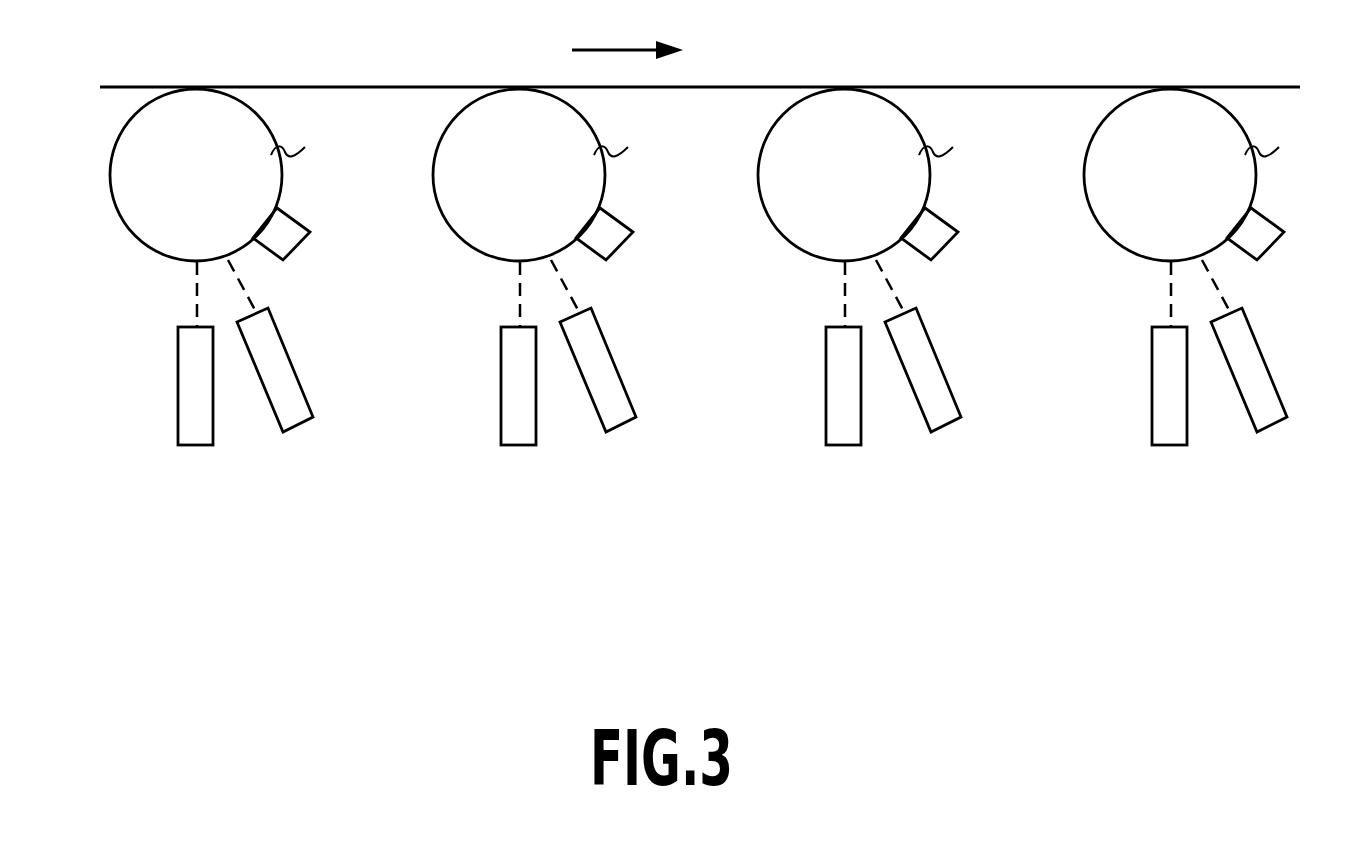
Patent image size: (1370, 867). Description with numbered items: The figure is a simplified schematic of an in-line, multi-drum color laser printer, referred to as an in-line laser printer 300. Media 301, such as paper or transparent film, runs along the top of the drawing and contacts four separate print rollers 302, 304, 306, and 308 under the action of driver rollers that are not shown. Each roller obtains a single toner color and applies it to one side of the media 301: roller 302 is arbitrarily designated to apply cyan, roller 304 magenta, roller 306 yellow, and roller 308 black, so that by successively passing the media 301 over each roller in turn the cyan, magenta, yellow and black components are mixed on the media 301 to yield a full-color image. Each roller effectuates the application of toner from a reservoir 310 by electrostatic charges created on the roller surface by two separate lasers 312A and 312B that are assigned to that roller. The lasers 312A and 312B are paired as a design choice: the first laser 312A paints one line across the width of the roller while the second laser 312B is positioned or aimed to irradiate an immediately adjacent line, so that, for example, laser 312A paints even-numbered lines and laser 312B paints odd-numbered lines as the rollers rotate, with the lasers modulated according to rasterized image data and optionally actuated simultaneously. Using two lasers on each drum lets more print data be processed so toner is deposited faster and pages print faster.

The in-line laser printer 300 is at (896, 679).
The media 301 is at (1267, 87).
The print roller 302 is at (142, 240).
The print roller 304 is at (465, 240).
The print roller 306 is at (790, 240).
The print roller 308 is at (1116, 240).
The reservoir 310 is at (300, 245).
The laser 312A is at (197, 445).
The laser 312B is at (300, 425).